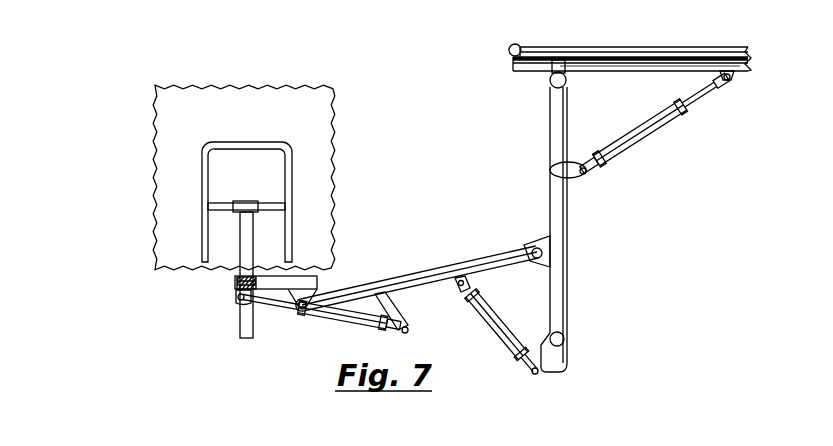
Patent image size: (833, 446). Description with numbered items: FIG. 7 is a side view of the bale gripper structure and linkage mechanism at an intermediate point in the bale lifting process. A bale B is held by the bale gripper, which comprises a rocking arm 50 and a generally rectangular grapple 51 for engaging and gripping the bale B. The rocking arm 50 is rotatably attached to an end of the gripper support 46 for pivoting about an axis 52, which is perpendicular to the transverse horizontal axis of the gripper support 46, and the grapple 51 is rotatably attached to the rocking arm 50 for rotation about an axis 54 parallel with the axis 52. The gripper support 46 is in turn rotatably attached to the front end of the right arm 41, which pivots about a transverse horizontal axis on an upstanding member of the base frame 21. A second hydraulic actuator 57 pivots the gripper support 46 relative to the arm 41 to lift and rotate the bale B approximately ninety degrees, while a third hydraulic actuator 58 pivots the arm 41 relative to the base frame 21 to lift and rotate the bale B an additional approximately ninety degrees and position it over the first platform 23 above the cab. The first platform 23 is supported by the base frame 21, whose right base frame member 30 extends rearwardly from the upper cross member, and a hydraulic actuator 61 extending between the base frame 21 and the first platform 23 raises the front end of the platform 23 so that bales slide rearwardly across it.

The bale B is at (320, 130).
The base frame 21 is at (558, 280).
The first platform 23 is at (600, 47).
The right base frame member 30 is at (737, 53).
The right arm 41 is at (436, 272).
The gripper support 46 is at (298, 282).
The rocking arm 50 is at (240, 322).
The grapple 51 is at (286, 177).
The axis of rotation of rocking arm 52 is at (236, 283).
The axis of rotation of grapple 54 is at (245, 204).
The second hydraulic actuator 57 is at (340, 325).
The third hydraulic actuator 58 is at (507, 348).
The hydraulic actuator 61 is at (650, 133).